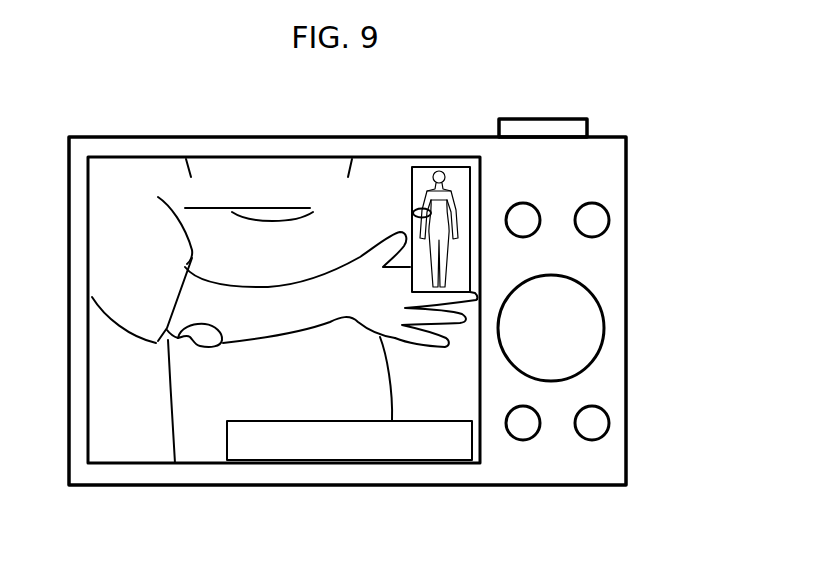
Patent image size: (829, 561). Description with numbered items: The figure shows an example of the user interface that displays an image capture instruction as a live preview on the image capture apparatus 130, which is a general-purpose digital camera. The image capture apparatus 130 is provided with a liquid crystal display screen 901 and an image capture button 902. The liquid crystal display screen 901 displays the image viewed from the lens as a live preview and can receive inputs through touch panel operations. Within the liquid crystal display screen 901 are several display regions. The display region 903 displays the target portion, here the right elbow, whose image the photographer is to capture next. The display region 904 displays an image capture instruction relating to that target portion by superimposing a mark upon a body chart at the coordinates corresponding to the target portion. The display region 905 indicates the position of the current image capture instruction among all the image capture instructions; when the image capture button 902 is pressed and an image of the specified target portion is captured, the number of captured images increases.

The image capture apparatus 130 is at (82, 135).
The liquid crystal display screen 901 is at (172, 157).
The image capture button 902 is at (575, 119).
The display region 903 is at (277, 180).
The display region 904 is at (442, 167).
The display region 905 is at (383, 460).